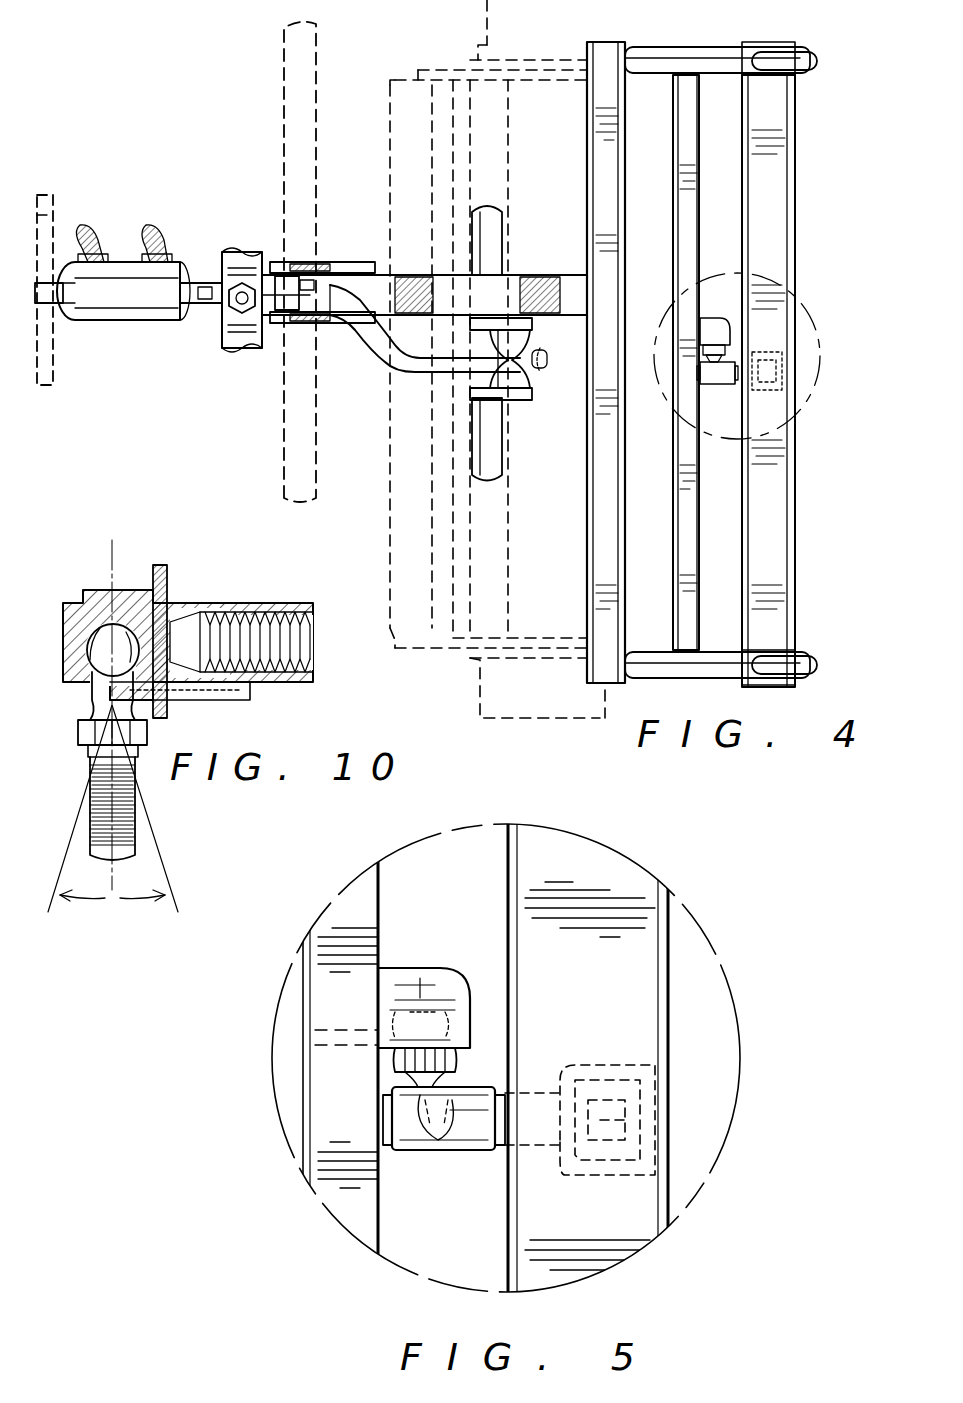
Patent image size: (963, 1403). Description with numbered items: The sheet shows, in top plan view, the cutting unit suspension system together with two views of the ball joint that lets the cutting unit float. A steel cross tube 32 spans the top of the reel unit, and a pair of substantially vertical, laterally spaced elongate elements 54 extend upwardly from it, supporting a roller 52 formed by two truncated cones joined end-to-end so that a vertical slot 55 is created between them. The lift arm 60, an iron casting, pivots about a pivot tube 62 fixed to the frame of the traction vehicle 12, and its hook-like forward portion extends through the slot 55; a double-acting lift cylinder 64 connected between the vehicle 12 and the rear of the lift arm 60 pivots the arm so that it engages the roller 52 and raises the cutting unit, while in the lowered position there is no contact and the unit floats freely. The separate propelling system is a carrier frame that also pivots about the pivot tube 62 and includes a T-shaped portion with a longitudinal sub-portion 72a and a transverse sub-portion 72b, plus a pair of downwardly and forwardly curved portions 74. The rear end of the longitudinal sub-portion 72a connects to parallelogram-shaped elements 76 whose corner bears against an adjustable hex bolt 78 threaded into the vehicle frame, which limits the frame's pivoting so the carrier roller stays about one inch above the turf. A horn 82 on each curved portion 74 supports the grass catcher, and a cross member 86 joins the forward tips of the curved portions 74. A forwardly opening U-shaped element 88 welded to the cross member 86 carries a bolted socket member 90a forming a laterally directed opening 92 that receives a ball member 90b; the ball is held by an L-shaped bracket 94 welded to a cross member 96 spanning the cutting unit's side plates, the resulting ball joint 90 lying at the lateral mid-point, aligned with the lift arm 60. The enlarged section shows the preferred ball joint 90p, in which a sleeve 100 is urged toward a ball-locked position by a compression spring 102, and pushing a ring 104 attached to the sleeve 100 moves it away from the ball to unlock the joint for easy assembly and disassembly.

In FIG. 4, the traction vehicle 12 is at (55, 208).
In FIG. 4, the cross tube 32 is at (503, 235).
In FIG. 4, the roller 52 is at (526, 338).
In FIG. 4, the elongate elements 54 is at (470, 324).
In FIG. 4, the vertical slot 55 is at (545, 384).
In FIG. 4, the lift arm 60 is at (350, 300).
In FIG. 4, the pivot tube 62 is at (284, 142).
In FIG. 4, the lift cylinder 64 is at (128, 322).
In FIG. 4, the longitudinal sub-portion 72a is at (415, 275).
In FIG. 4, the transverse sub-portion 72b is at (600, 148).
In FIG. 4, the curved portions 74 is at (665, 48).
In FIG. 4, the parallelogram-shaped elements 76 is at (292, 262).
In FIG. 4, the hex bolt 78 is at (230, 305).
In FIG. 4, the horn 82 is at (818, 62).
In FIG. 4, the cross member 86 is at (782, 200).
In FIG. 5, the cross member 86 is at (592, 990).
In FIG. 5, the U-shaped element 88 is at (625, 1078).
In FIG. 4, the ball joint 90 is at (718, 386).
In FIG. 10, the socket member 90a is at (100, 622).
In FIG. 5, the socket member 90a is at (476, 1152).
In FIG. 10, the ball member 90b is at (118, 640).
In FIG. 5, the ball member 90b is at (420, 1110).
In FIG. 10, the ball joint 90p is at (100, 530).
In FIG. 5, the opening 92 is at (465, 1075).
In FIG. 5, the L-shaped bracket 94 is at (400, 968).
In FIG. 4, the cross member 96 is at (686, 531).
In FIG. 5, the cross member 96 is at (350, 915).
In FIG. 10, the sleeve 100 is at (235, 695).
In FIG. 10, the compression spring 102 is at (212, 603).
In FIG. 10, the ring 104 is at (165, 568).